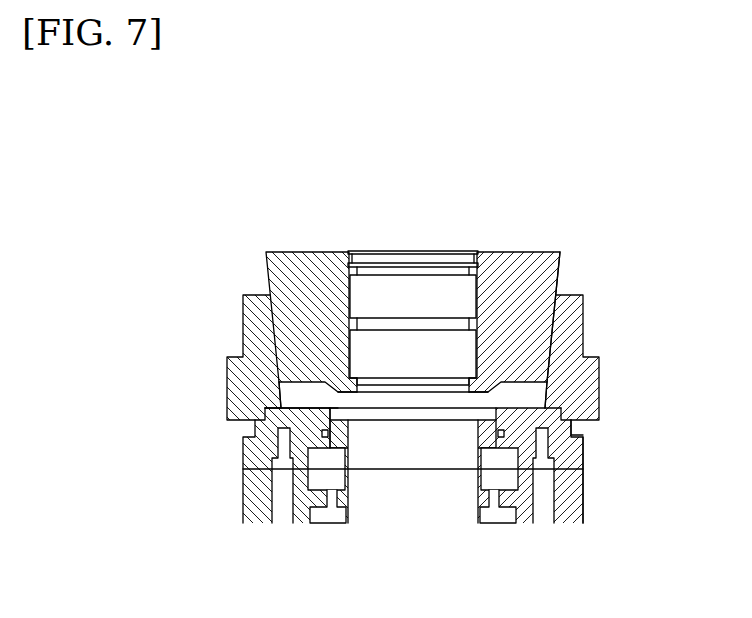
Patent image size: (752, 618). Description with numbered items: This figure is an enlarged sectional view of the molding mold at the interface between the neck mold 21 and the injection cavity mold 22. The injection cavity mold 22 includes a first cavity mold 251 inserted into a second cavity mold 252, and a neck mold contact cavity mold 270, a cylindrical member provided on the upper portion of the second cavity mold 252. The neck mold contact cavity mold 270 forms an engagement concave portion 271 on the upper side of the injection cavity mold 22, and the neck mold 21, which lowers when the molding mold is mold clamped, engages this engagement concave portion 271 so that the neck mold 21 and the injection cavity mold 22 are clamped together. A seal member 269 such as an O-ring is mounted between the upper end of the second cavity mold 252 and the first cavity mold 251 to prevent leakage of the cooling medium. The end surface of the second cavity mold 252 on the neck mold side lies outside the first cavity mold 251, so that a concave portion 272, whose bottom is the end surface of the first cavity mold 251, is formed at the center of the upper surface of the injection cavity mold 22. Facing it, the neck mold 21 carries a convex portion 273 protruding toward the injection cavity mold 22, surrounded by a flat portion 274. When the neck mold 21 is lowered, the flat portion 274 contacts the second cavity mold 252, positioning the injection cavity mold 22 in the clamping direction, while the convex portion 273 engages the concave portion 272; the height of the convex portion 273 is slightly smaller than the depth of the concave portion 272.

The neck mold 21 is at (282, 258).
The injection cavity mold 22 is at (679, 420).
The neck mold contact cavity mold 270 is at (228, 370).
The engagement concave portion 271 is at (545, 296).
The concave portion 272 is at (337, 396).
The seal member 269 is at (506, 434).
The first cavity mold 251 is at (568, 434).
The second cavity mold 252 is at (575, 457).
The convex portion 273 is at (336, 402).
The flat portion 274 is at (306, 395).